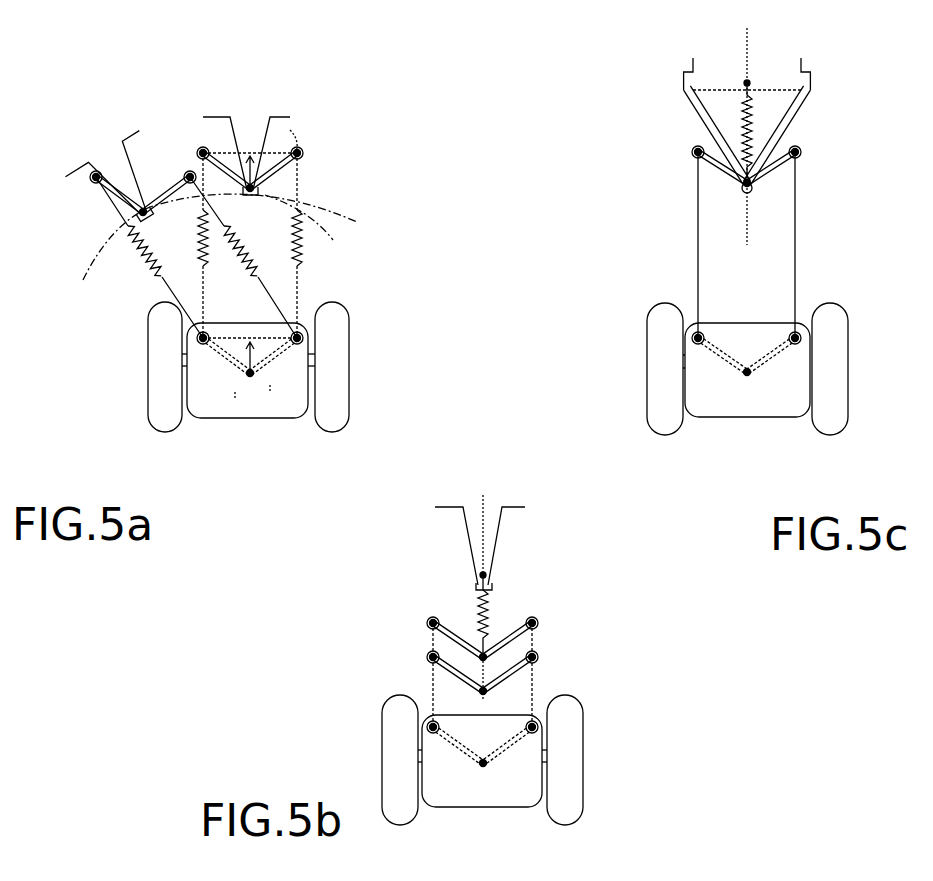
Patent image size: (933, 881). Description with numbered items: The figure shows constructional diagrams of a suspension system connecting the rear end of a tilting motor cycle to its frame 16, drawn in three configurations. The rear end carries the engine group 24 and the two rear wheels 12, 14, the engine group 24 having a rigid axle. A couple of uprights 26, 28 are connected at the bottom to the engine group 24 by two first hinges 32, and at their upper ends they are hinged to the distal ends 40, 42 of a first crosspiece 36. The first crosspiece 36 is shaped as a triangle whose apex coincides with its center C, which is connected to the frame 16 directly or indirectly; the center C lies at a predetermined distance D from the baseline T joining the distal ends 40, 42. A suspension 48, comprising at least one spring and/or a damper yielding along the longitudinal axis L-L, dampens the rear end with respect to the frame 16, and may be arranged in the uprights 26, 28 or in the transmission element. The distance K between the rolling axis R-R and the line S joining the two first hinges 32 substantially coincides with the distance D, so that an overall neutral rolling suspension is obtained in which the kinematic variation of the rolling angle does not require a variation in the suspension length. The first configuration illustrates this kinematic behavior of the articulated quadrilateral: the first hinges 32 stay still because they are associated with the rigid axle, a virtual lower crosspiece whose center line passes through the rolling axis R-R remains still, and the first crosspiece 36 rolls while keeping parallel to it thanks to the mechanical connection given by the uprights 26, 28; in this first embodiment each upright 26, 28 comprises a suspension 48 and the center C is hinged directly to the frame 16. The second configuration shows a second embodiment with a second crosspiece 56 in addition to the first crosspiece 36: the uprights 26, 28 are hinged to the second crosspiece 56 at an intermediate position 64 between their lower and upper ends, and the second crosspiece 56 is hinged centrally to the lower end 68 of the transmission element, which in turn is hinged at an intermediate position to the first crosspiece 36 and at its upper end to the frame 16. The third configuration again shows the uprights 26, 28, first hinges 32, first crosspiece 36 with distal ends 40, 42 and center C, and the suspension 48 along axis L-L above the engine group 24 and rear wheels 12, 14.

In FIG. 5A, the rear wheel 12 is at (170, 428).
In FIG. 5C, the rear wheel 12 is at (668, 415).
In FIG. 5B, the rear wheel 12 is at (410, 805).
In FIG. 5A, the rear wheel 14 is at (340, 348).
In FIG. 5C, the rear wheel 14 is at (835, 418).
In FIG. 5B, the rear wheel 14 is at (567, 802).
In FIG. 5A, the frame 16 is at (268, 126).
In FIG. 5C, the frame 16 is at (697, 78).
In FIG. 5B, the frame 16 is at (495, 522).
In FIG. 5A, the engine group 24 is at (302, 412).
In FIG. 5C, the engine group 24 is at (770, 405).
In FIG. 5B, the engine group 24 is at (521, 798).
In FIG. 5A, the upright 26 is at (157, 208).
In FIG. 5C, the upright 26 is at (696, 255).
In FIG. 5A, the upright 28 is at (300, 162).
In FIG. 5C, the upright 28 is at (798, 236).
In FIG. 5A, the first hinges 32 is at (303, 330).
In FIG. 5C, the first hinges 32 is at (693, 332).
In FIG. 5B, the first hinges 32 is at (426, 726).
In FIG. 5A, the first crosspiece 36 is at (108, 178).
In FIG. 5C, the first crosspiece 36 is at (780, 172).
In FIG. 5B, the first crosspiece 36 is at (505, 630).
In FIG. 5A, the distal end 40 is at (93, 180).
In FIG. 5C, the distal end 40 is at (692, 150).
In FIG. 5B, the distal end 40 is at (430, 615).
In FIG. 5A, the distal end 42 is at (190, 171).
In FIG. 5C, the distal end 42 is at (799, 148).
In FIG. 5B, the distal end 42 is at (535, 625).
In FIG. 5C, the suspension 48 is at (750, 108).
In FIG. 5B, the suspension 48 is at (478, 605).
In FIG. 5B, the second crosspiece 56 is at (500, 693).
In FIG. 5B, the intermediate position 64 is at (428, 655).
In FIG. 5B, the lower end of the transmission element 68 is at (476, 692).
In FIG. 5A, the center of the first crosspiece C is at (141, 206).
In FIG. 5C, the center of the first crosspiece C is at (758, 188).
In FIG. 5B, the center of the first crosspiece C is at (496, 655).
In FIG. 5A, the predetermined distance D is at (248, 154).
In FIG. 5A, the distance K is at (240, 392).
In FIG. 5C, the longitudinal axis L is at (746, 136).
In FIG. 5B, the longitudinal axis L is at (482, 586).
In FIG. 5A, the rolling axis R is at (251, 378).
In FIG. 5C, the rolling axis R is at (745, 378).
In FIG. 5B, the rolling axis R is at (485, 770).
In FIG. 5A, the line joining the first hinges S is at (270, 385).
In FIG. 5A, the baseline T is at (292, 150).